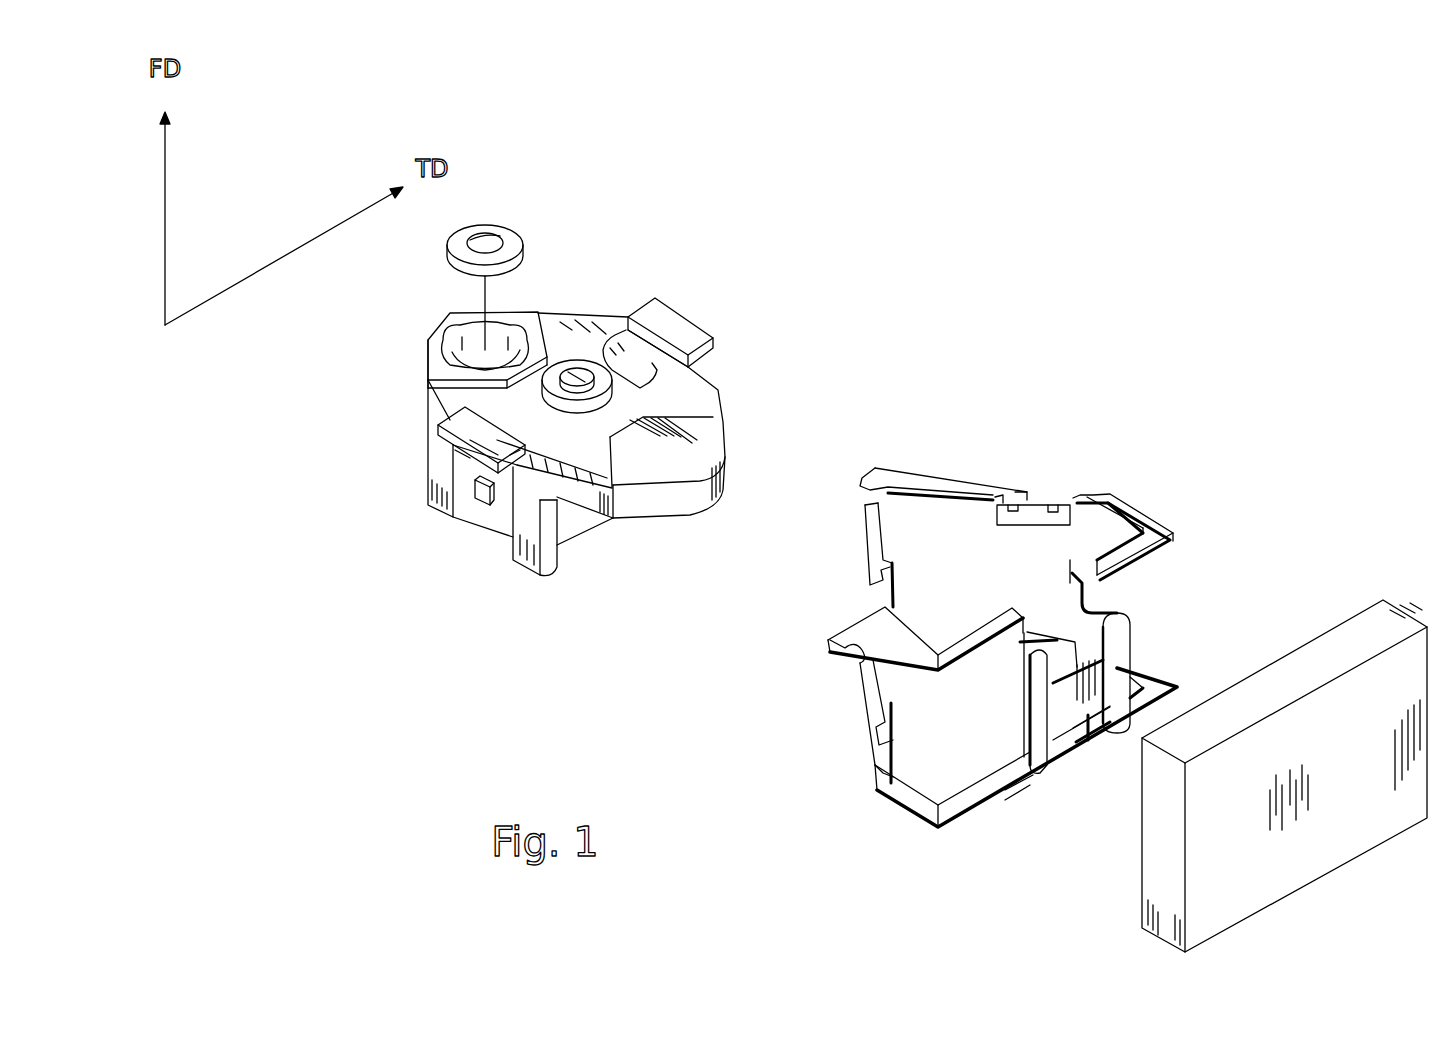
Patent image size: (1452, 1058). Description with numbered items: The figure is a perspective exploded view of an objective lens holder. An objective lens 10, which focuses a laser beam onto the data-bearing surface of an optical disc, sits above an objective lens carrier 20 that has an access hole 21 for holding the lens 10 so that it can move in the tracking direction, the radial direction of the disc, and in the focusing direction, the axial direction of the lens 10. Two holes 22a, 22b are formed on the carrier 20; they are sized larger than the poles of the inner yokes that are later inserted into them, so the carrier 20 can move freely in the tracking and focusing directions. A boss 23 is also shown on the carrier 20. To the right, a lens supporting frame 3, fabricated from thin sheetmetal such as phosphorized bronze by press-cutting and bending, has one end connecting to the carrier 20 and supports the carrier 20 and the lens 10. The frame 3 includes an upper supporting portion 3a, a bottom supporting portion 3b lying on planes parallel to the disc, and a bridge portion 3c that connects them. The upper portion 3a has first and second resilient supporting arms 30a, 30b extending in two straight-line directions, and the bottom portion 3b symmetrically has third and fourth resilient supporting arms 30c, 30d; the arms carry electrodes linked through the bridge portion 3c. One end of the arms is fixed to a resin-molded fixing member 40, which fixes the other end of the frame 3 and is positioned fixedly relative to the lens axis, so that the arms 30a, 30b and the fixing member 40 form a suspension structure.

The objective lens 10 is at (508, 221).
The objective lens carrier 20 is at (723, 405).
The access hole 21 is at (462, 331).
The hole 22a is at (613, 340).
The hole 22b is at (440, 430).
The boss 23 is at (585, 382).
The lens supporting frame 3 is at (822, 664).
The upper supporting portion 3a is at (967, 408).
The bottom supporting portion 3b is at (953, 848).
The bridge portion 3c is at (1117, 670).
The first resilient supporting arm 30a is at (957, 482).
The second resilient supporting arm 30b is at (862, 555).
The third resilient supporting arm 30c is at (1053, 633).
The fourth resilient supporting arm 30d is at (980, 803).
The fixing member 40 is at (1345, 622).